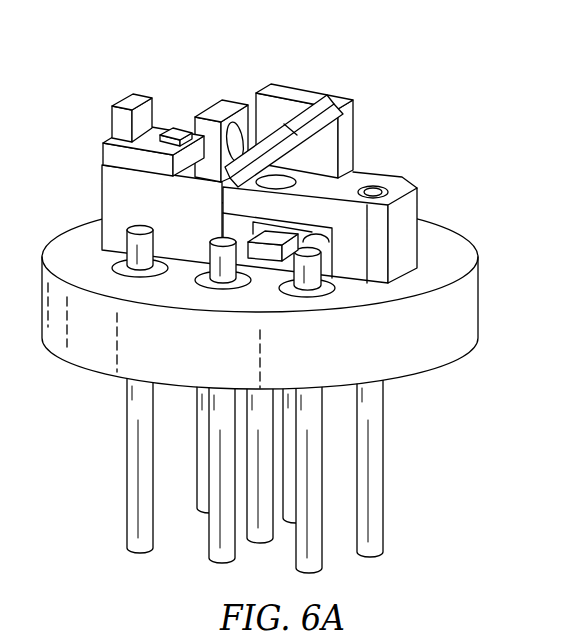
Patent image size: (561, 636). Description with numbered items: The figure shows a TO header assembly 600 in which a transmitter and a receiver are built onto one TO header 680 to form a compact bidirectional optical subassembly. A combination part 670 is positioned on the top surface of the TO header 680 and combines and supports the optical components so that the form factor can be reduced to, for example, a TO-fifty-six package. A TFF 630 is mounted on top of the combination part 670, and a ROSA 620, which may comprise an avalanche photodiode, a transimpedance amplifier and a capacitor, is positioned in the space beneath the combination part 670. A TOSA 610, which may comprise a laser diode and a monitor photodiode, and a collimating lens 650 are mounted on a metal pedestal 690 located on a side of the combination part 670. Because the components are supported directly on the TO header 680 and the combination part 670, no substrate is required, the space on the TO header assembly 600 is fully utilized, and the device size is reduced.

The TO header assembly 600 is at (282, 295).
The TOSA 610 is at (103, 142).
The ROSA 620 is at (268, 272).
The TFF 630 is at (333, 94).
The collimating lens 650 is at (220, 102).
The combination part 670 is at (407, 242).
The TO header 680 is at (452, 318).
The metal pedestal 690 is at (123, 190).